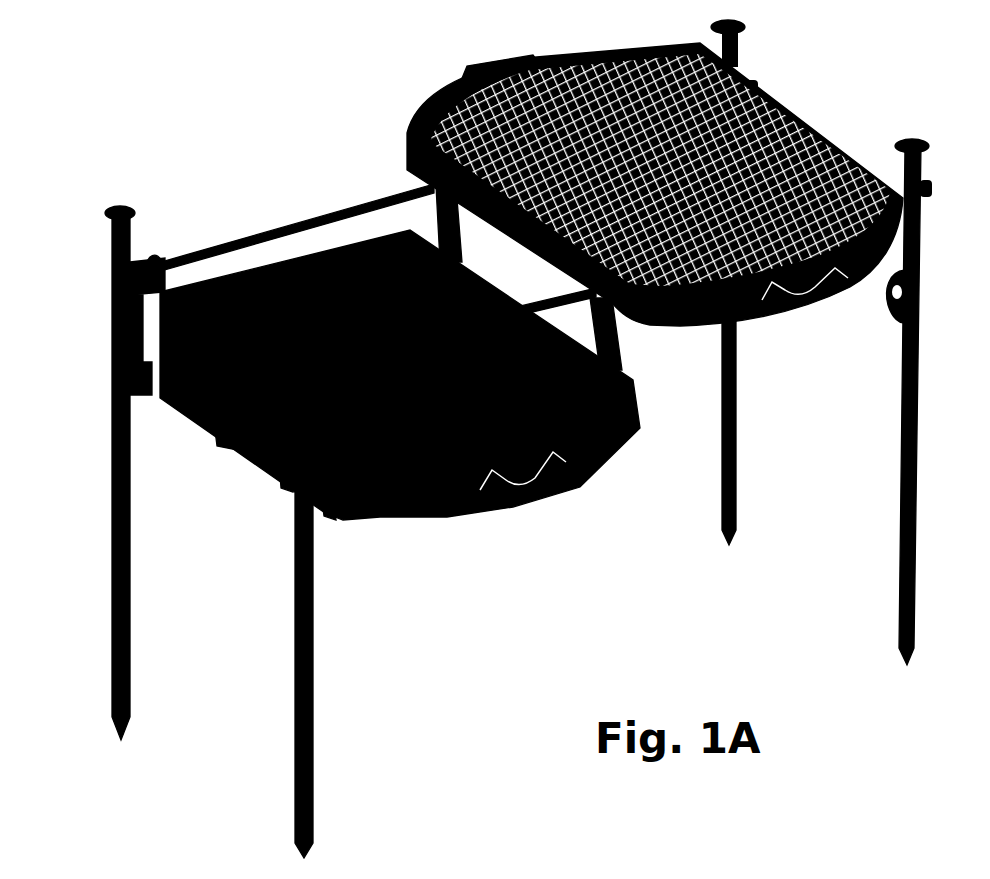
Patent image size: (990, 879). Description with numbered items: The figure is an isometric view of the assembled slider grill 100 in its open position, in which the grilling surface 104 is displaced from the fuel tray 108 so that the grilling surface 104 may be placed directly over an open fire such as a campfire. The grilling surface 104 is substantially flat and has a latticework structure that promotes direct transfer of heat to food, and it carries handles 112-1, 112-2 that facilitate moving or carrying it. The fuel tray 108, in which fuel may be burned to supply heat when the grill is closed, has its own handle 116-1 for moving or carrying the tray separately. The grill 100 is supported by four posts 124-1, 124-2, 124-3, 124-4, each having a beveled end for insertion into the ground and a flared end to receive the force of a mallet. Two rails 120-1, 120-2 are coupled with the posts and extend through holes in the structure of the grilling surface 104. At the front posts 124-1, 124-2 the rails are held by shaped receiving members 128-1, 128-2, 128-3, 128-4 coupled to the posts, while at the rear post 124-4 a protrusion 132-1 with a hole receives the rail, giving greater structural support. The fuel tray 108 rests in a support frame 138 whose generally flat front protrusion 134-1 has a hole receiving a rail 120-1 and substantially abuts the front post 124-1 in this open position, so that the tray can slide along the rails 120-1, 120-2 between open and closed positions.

The grill 100 is at (304, 166).
The grilling surface 104 is at (621, 46).
The fuel tray 108 is at (462, 503).
The handle 112-1 is at (847, 285).
The handle 112-2 is at (497, 62).
The handle 116-1 is at (543, 487).
The rail 120-1 is at (245, 240).
The rail 120-2 is at (565, 300).
The front post 124-1 is at (128, 468).
The front post 124-2 is at (314, 617).
The rear post 124-3 is at (737, 433).
The rear post 124-4 is at (916, 493).
The receiving member 128-1 is at (130, 395).
The receiving member 128-2 is at (284, 490).
The receiving member 128-3 is at (113, 326).
The receiving member 128-4 is at (226, 442).
The protrusion 132-1 is at (897, 322).
The front protrusion 134-1 is at (151, 262).
The support frame 138 is at (323, 510).